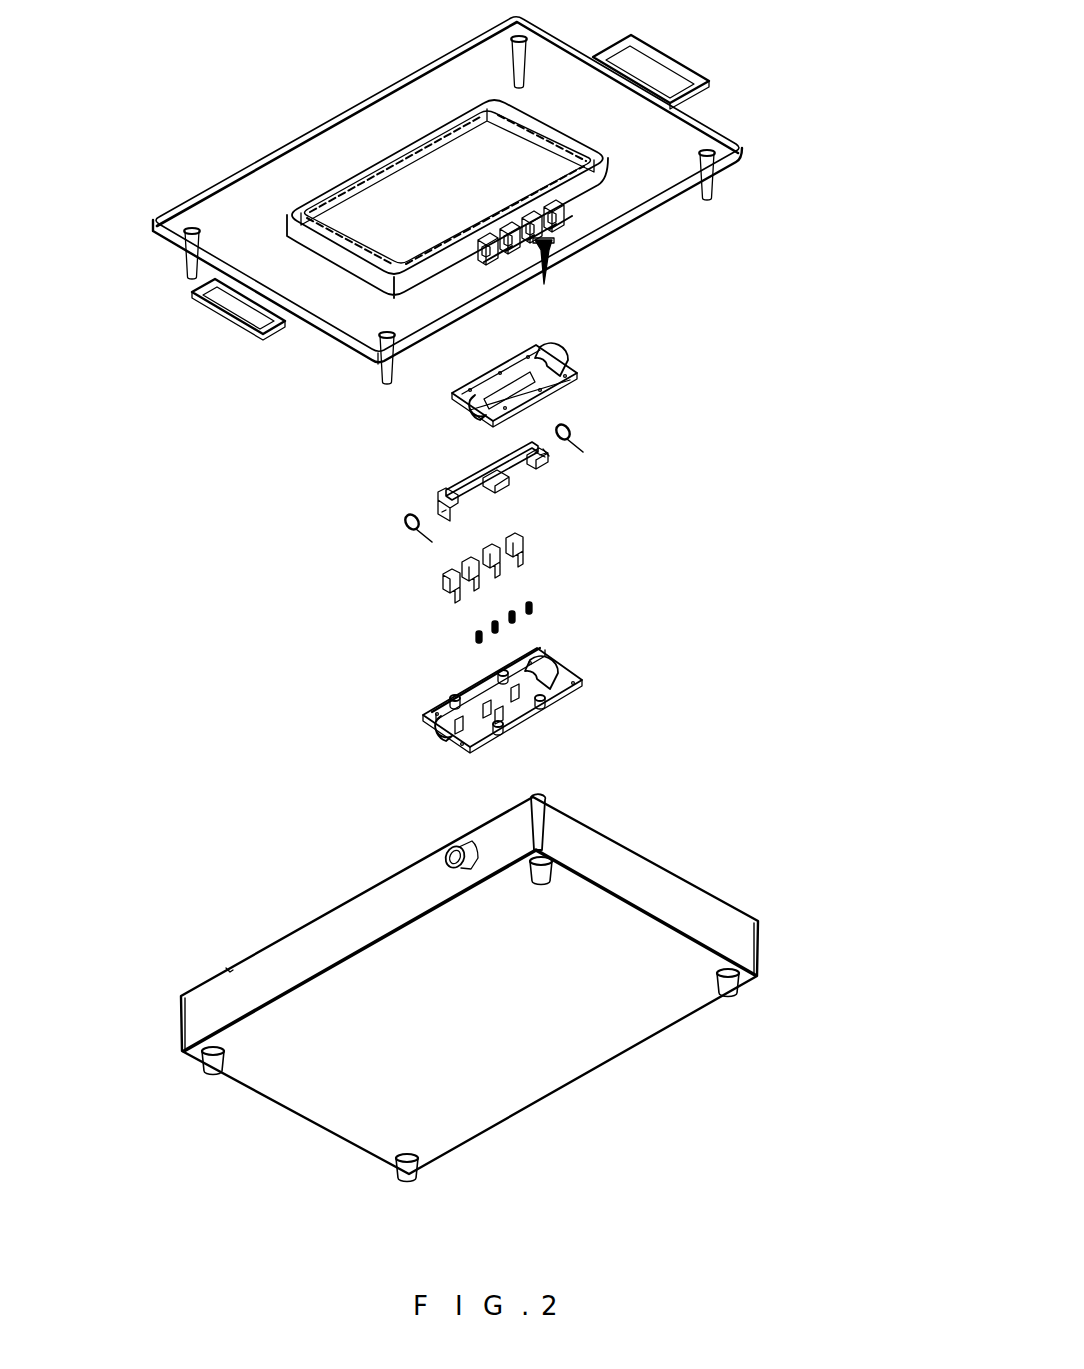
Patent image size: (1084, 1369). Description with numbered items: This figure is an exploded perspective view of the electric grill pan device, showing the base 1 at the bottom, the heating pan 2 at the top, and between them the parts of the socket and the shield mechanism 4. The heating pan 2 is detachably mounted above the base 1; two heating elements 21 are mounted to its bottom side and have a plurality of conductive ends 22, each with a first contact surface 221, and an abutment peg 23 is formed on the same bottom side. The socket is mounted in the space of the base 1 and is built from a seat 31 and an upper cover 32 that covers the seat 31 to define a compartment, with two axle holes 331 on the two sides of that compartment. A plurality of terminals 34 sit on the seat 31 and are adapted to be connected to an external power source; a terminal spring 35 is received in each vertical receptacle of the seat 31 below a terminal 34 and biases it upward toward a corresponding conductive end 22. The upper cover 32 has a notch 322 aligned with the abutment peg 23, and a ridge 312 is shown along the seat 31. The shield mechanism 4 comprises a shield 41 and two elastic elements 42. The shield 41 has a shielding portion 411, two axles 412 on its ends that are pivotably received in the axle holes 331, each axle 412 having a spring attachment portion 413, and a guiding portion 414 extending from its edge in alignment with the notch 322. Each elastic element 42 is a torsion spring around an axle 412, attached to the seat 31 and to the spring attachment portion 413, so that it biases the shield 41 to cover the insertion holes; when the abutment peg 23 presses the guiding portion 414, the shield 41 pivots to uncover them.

The base 1 is at (770, 942).
The heating pan 2 is at (746, 152).
The heating element 21 is at (610, 147).
The conductive end 22 is at (570, 228).
The first contact surface 221 is at (555, 235).
The abutment peg 23 is at (557, 265).
The seat 31 is at (564, 701).
The hinge ridge 312 is at (517, 707).
The upper cover 32 is at (579, 386).
The notch 322 is at (533, 397).
The axle hole 331 is at (557, 665).
The terminal 34 is at (448, 580).
The terminal spring 35 is at (535, 607).
The shield mechanism 4 is at (523, 494).
The shield 41 is at (473, 487).
The shielding portion 411 is at (450, 483).
The axle 412 is at (545, 457).
The spring attachment portion 413 is at (543, 450).
The guiding portion 414 is at (510, 477).
The elastic element 42 is at (573, 435).